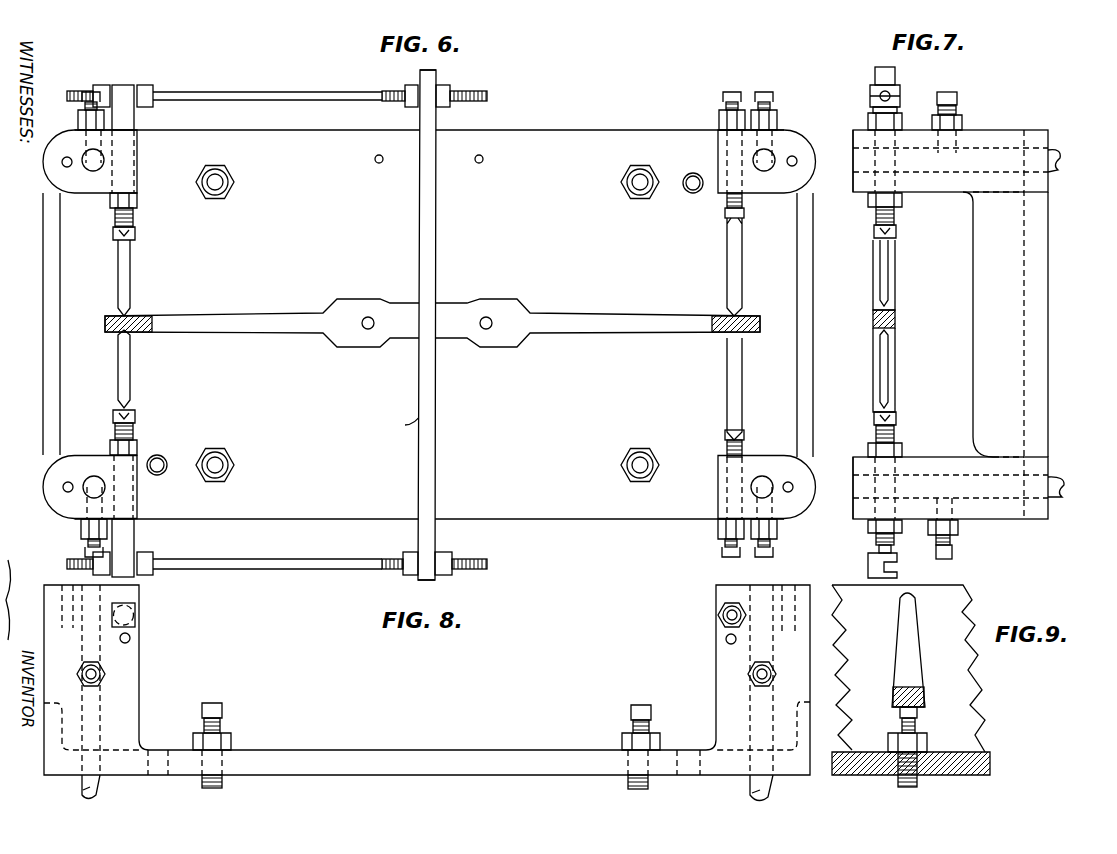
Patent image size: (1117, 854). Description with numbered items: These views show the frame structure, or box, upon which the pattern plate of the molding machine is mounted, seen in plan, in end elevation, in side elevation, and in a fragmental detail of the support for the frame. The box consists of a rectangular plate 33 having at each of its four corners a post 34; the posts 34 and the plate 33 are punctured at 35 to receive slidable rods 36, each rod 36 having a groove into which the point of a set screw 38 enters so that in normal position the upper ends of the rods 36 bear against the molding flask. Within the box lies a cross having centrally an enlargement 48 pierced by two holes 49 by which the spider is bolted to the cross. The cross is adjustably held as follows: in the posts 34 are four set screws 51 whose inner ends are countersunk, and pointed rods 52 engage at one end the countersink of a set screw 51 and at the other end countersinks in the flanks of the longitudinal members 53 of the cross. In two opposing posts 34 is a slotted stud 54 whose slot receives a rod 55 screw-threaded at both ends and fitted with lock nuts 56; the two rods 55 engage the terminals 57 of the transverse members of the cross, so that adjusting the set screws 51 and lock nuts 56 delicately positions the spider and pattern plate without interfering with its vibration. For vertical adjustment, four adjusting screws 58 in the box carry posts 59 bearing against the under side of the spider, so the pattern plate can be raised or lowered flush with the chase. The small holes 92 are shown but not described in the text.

In FIG. 6, the plate 33 is at (428, 324).
In FIG. 7, the plate 33 is at (1044, 361).
In FIG. 8, the plate 33 is at (413, 760).
In FIG. 9, the plate 33 is at (968, 768).
In FIG. 6, the post 34 is at (56, 181).
In FIG. 7, the post 34 is at (863, 162).
In FIG. 8, the post 34 is at (134, 661).
In FIG. 6, the puncture 35 is at (94, 178).
In FIG. 7, the slidable rod 36 is at (1064, 180).
In FIG. 8, the slidable rod 36 is at (108, 796).
In FIG. 6, the set screw 38 is at (72, 121).
In FIG. 7, the set screw 38 is at (970, 119).
In FIG. 8, the set screw 38 is at (113, 683).
In FIG. 6, the enlargement 48 is at (448, 308).
In FIG. 6, the hole 49 is at (366, 341).
In FIG. 6, the set screw 51 is at (143, 220).
In FIG. 7, the set screw 51 is at (904, 236).
In FIG. 8, the set screw 51 is at (713, 619).
In FIG. 6, the pointed rod 52 is at (141, 273).
In FIG. 7, the pointed rod 52 is at (906, 288).
In FIG. 6, the longitudinal member 53 is at (218, 318).
In FIG. 6, the slotted stud 54 is at (142, 123).
In FIG. 7, the slotted stud 54 is at (863, 85).
In FIG. 8, the slotted stud 54 is at (142, 621).
In FIG. 6, the rod 55 is at (277, 318).
In FIG. 7, the rod 55 is at (900, 90).
In FIG. 6, the lock nut 56 is at (100, 79).
In FIG. 6, the terminal 57 is at (413, 77).
In FIG. 7, the terminal 57 is at (886, 60).
In FIG. 6, the adjusting screw 58 is at (228, 195).
In FIG. 8, the adjusting screw 58 is at (230, 723).
In FIG. 9, the adjusting screw 58 is at (934, 724).
In FIG. 9, the post 59 is at (935, 662).
In FIG. 6, the hole 92 is at (380, 170).